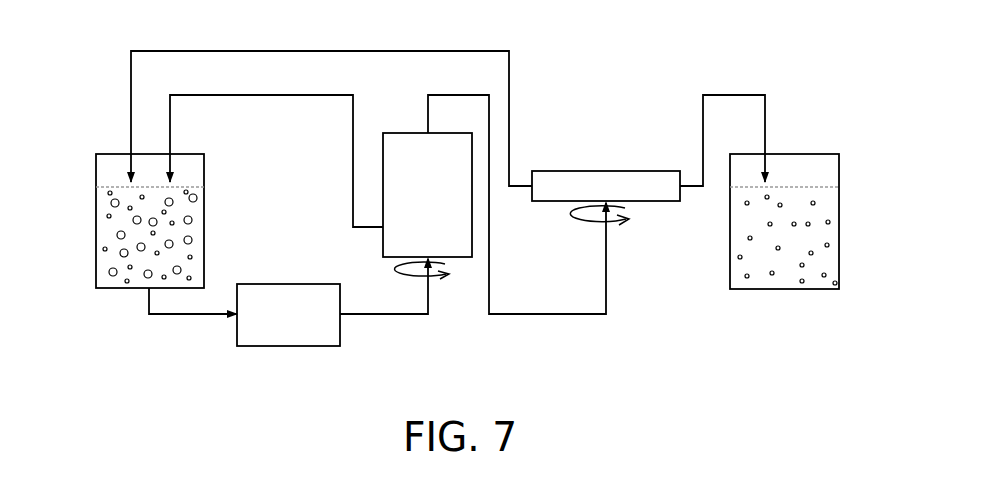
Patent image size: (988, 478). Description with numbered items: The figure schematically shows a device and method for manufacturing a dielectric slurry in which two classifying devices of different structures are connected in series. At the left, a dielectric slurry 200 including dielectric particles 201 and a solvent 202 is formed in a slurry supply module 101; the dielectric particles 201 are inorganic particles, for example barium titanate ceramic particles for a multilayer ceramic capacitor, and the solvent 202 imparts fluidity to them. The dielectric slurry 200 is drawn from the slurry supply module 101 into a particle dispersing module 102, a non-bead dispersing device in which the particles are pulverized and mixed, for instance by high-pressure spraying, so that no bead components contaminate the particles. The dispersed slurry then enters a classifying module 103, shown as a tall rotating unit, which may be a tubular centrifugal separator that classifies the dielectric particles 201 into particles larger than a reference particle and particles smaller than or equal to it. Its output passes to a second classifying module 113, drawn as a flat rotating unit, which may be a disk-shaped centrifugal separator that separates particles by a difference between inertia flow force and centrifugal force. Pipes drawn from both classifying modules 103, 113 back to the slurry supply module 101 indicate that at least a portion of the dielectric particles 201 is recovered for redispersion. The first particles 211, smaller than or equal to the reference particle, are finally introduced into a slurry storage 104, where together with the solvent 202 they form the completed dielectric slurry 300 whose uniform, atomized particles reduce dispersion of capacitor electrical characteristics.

The slurry supply module 101 is at (112, 154).
The particle dispersing module 102 is at (268, 284).
The classifying module 103 is at (405, 133).
The classifying module 113 is at (655, 171).
The slurry storage 104 is at (825, 154).
The dielectric slurry 200 is at (47, 349).
The dielectric particles 201 is at (113, 277).
The solvent 202 is at (99, 262).
The first particles 211 is at (824, 277).
The dielectric slurry 300 is at (890, 349).